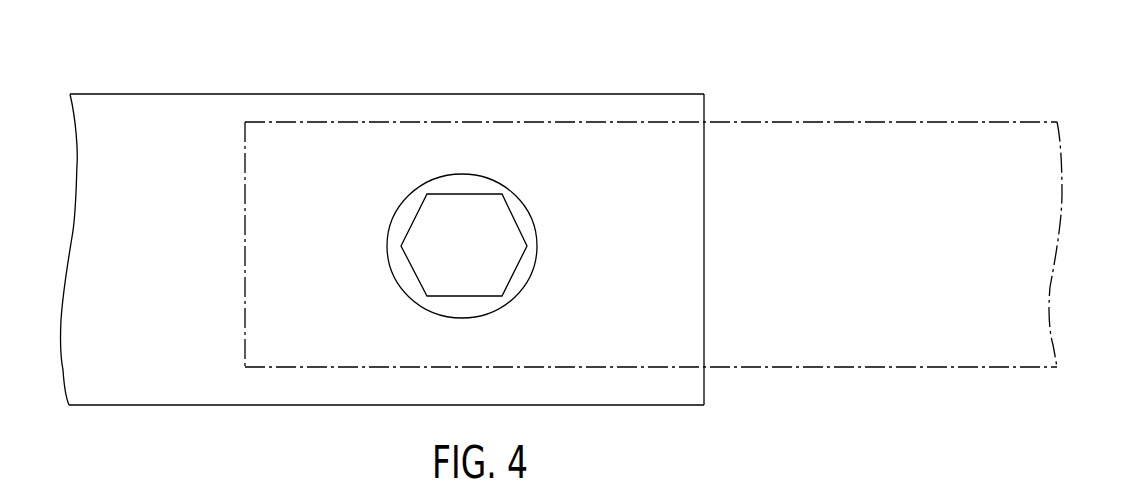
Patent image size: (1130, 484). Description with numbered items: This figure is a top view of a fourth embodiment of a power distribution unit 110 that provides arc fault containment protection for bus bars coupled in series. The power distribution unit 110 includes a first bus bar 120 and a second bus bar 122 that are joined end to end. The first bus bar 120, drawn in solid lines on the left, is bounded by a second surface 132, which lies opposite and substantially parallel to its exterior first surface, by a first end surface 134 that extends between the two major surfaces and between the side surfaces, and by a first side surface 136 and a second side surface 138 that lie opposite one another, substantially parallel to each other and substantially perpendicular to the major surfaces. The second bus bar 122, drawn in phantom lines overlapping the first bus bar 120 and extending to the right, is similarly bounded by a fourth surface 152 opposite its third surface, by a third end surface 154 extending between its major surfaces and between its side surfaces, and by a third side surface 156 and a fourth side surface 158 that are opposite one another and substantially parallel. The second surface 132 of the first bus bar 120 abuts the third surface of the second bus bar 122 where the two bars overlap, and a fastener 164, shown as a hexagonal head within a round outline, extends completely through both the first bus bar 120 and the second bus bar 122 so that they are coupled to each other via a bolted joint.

The power distribution unit 110 is at (95, 78).
The first bus bar 120 is at (160, 92).
The second bus bar 122 is at (982, 120).
The second surface 132 is at (92, 248).
The first end surface 134 is at (705, 97).
The first side surface 136 is at (120, 407).
The second side surface 138 is at (209, 93).
The fourth surface 152 is at (1037, 283).
The third end surface 154 is at (243, 230).
The third side surface 156 is at (942, 370).
The fourth side surface 158 is at (885, 120).
The fastener 164 is at (508, 264).